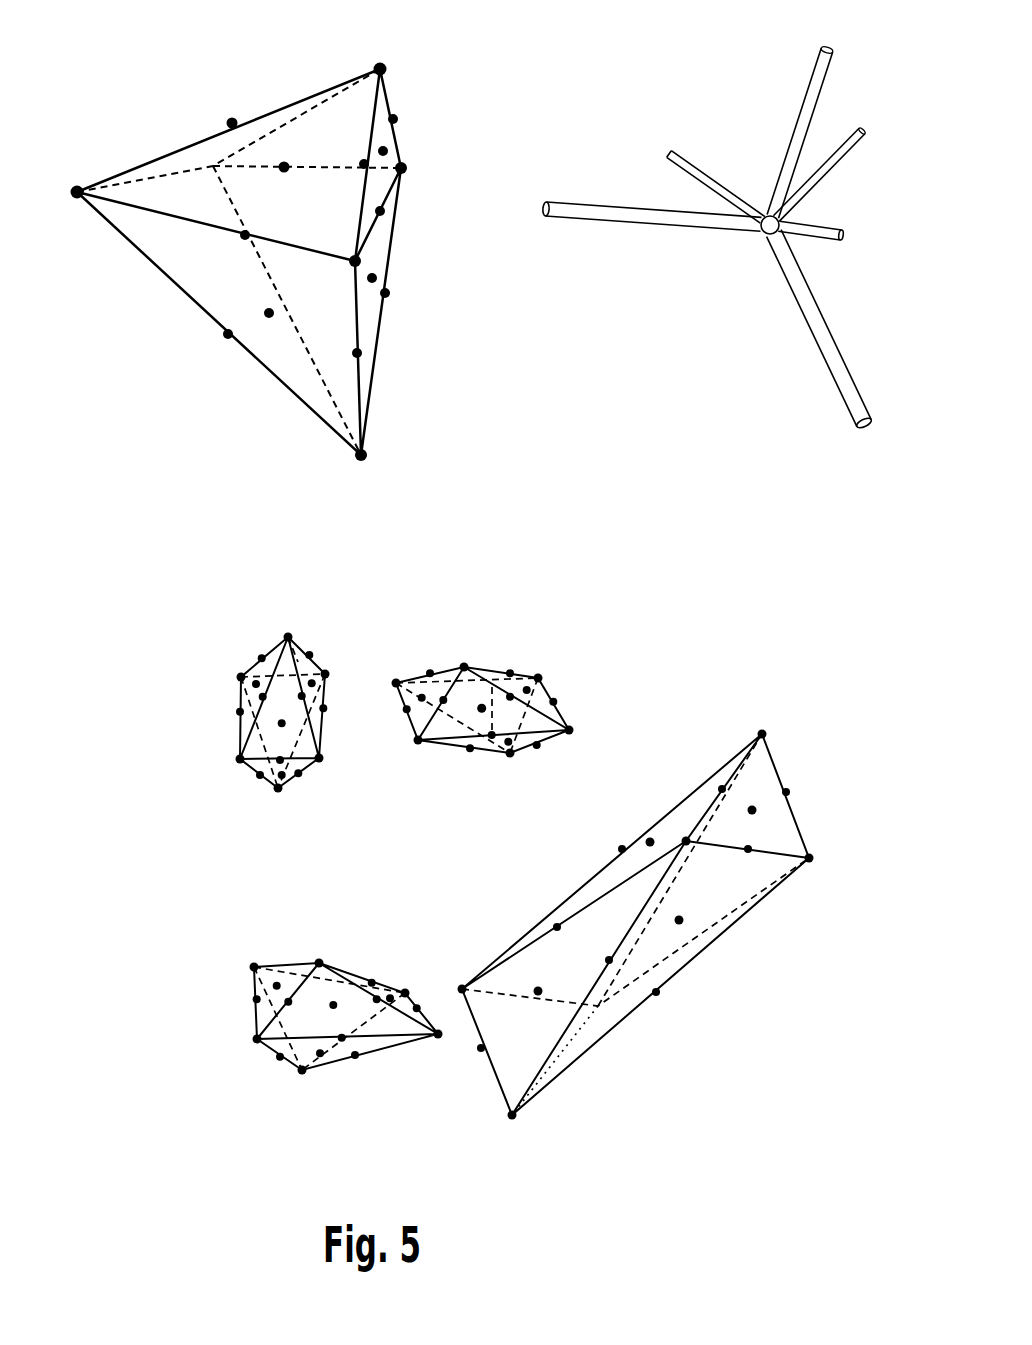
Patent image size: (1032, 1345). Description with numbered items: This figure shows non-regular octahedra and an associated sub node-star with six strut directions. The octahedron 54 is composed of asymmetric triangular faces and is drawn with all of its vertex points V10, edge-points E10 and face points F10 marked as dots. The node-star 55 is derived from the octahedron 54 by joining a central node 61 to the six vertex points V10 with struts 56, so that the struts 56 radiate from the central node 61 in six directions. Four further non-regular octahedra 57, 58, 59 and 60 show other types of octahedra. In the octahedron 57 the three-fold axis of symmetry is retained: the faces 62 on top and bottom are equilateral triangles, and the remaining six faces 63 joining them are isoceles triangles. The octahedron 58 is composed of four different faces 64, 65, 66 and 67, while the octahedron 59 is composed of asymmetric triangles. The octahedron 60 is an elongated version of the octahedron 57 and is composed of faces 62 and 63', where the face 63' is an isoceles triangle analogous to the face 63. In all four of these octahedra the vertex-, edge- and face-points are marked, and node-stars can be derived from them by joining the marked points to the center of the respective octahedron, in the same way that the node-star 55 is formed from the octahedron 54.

The octahedron 54 is at (239, 259).
The node-star 55 is at (722, 254).
The strut 56 is at (840, 164).
The non-regular octahedron 57 is at (241, 801).
The octahedron 58 is at (493, 751).
The octahedron 59 is at (241, 1100).
The octahedron 60 is at (648, 1080).
The central node 61 is at (762, 247).
The face 62 is at (298, 652).
The face 63 is at (488, 818).
The face 63' is at (634, 904).
The face 64 is at (544, 690).
The face 65 is at (566, 720).
The face 66 is at (500, 672).
The face 67 is at (445, 678).
The vertex point V10 is at (384, 60).
The edge-point E10 is at (230, 114).
The face point F10 is at (291, 153).